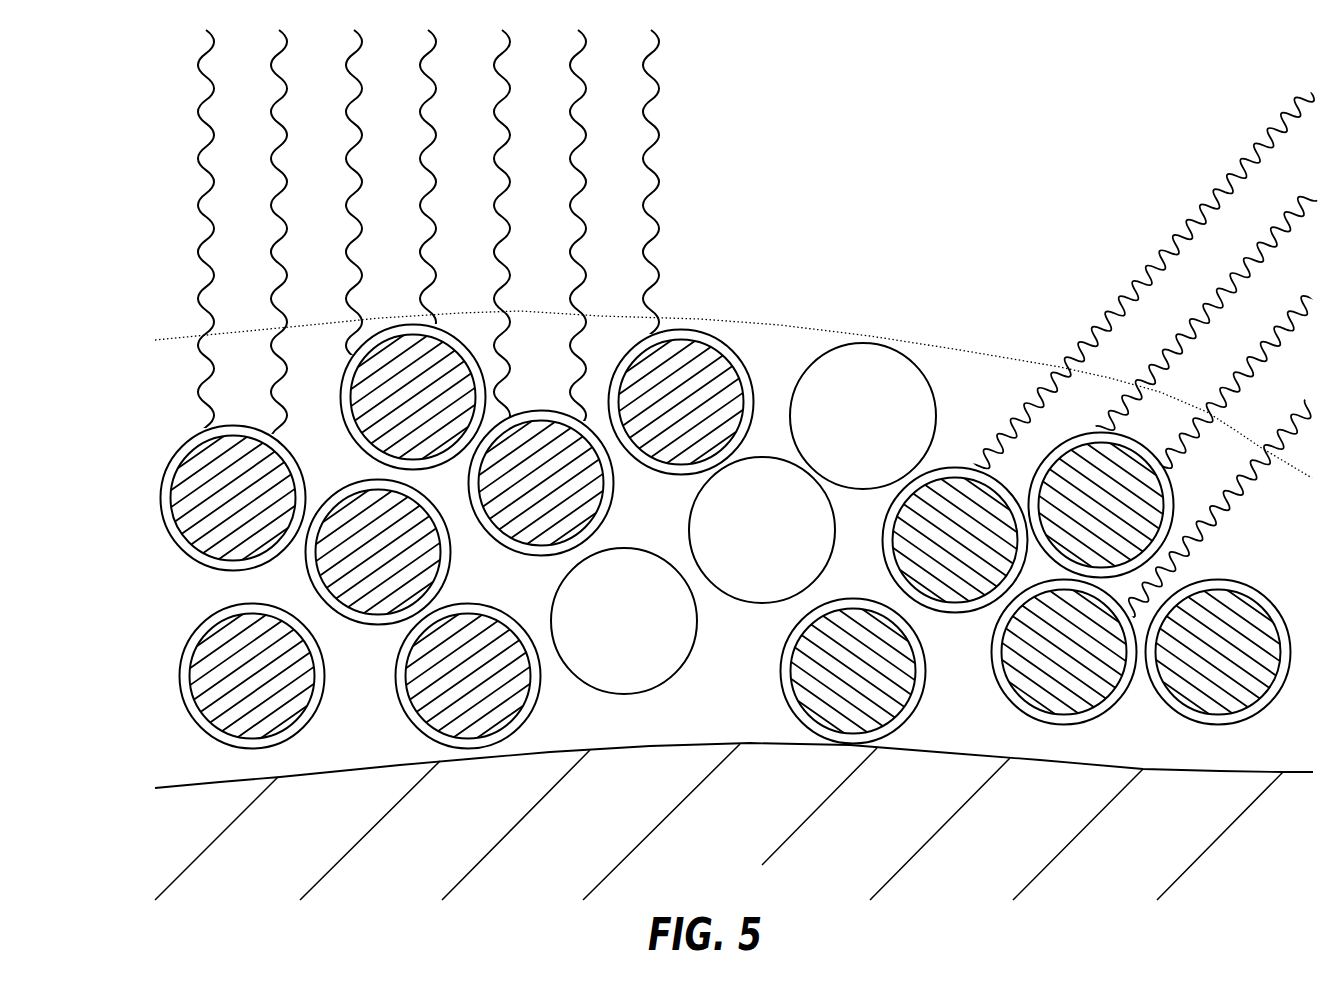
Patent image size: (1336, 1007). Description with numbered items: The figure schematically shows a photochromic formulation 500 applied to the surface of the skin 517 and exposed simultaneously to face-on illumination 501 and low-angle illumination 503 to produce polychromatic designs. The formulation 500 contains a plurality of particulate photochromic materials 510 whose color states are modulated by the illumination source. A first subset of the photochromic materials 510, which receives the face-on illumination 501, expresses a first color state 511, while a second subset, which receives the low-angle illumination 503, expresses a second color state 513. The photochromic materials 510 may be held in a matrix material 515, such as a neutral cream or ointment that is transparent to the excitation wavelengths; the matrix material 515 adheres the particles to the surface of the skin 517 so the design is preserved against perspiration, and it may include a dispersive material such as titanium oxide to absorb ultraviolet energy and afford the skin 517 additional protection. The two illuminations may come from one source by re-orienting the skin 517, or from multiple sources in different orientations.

The photochromic formulation 500 is at (854, 136).
The face-on illumination 501 is at (655, 125).
The low-angle illumination 503 is at (1158, 268).
The particulate photochromic materials 510 is at (947, 360).
The first color state 511 is at (678, 325).
The second color state 513 is at (1243, 582).
The matrix material 515 is at (777, 323).
The surface of the skin 517 is at (692, 748).